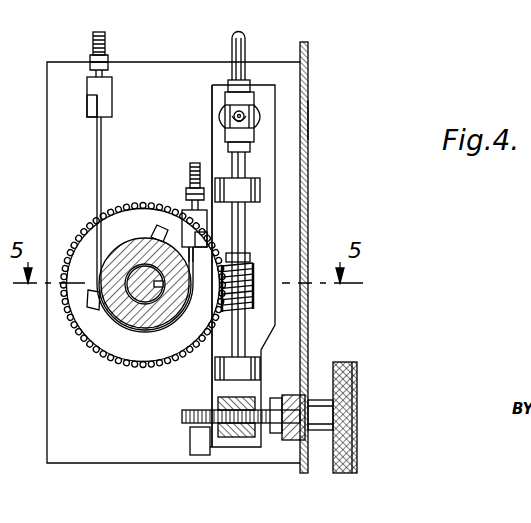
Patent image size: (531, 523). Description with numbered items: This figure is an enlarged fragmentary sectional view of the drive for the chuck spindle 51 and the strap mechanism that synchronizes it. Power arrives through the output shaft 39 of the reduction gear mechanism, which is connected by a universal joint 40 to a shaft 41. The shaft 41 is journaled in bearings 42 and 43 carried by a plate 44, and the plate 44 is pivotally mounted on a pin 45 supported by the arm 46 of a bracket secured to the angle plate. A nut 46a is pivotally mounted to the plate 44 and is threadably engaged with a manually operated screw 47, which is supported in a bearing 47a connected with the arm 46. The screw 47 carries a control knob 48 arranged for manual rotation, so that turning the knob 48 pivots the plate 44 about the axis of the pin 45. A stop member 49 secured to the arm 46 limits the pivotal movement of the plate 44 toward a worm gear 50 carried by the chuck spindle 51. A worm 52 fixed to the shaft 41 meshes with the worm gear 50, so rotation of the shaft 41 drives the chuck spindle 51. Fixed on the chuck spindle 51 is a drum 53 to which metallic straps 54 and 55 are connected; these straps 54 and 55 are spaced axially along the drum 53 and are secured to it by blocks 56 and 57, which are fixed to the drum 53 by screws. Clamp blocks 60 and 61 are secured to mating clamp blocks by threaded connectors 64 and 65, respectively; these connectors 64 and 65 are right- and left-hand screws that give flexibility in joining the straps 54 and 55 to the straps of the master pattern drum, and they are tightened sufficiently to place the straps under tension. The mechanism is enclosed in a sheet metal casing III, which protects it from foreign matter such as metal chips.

The output shaft 39 is at (247, 48).
The universal joint 40 is at (245, 112).
The shaft 41 is at (246, 226).
The bearing 42 is at (249, 185).
The bearing 43 is at (258, 372).
The plate 44 is at (212, 125).
The pin 45 is at (212, 112).
The arm 46 is at (304, 72).
The nut 46a is at (220, 402).
The manually operated screw 47 is at (181, 412).
The bearing 47a is at (285, 395).
The control knob 48 is at (358, 392).
The stop member 49 is at (189, 438).
The worm gear 50 is at (94, 352).
The chuck spindle 51 is at (146, 300).
The worm 52 is at (256, 278).
The drum 53 is at (137, 243).
The metallic strap 54 is at (96, 195).
The metallic strap 55 is at (196, 262).
The block 56 is at (95, 311).
The block 57 is at (163, 228).
The clamp block 60 is at (112, 87).
The clamp block 61 is at (183, 212).
The threaded connector 64 is at (107, 43).
The threaded connector 65 is at (190, 170).
The sheet metal casing III is at (308, 118).